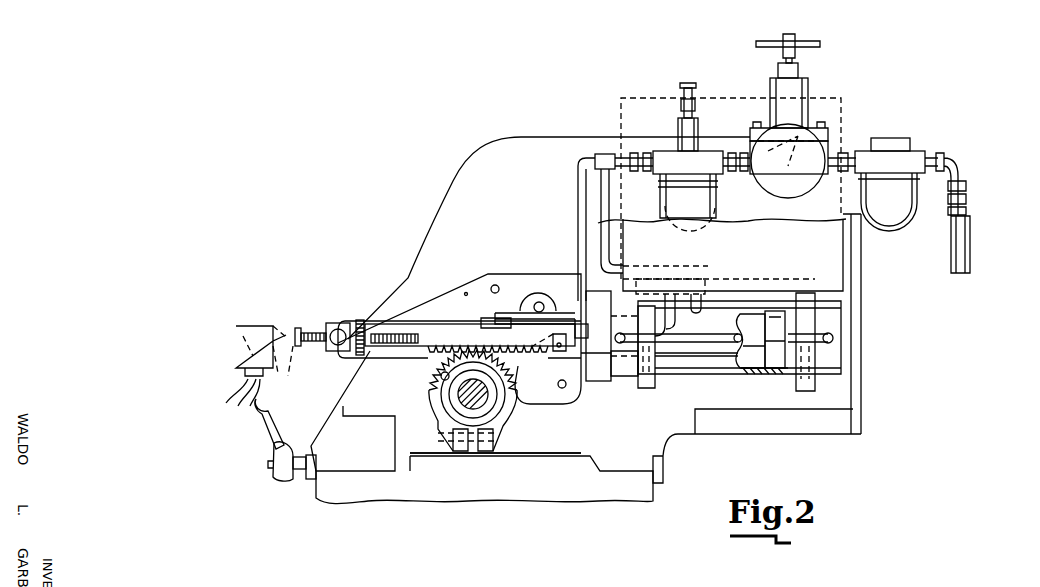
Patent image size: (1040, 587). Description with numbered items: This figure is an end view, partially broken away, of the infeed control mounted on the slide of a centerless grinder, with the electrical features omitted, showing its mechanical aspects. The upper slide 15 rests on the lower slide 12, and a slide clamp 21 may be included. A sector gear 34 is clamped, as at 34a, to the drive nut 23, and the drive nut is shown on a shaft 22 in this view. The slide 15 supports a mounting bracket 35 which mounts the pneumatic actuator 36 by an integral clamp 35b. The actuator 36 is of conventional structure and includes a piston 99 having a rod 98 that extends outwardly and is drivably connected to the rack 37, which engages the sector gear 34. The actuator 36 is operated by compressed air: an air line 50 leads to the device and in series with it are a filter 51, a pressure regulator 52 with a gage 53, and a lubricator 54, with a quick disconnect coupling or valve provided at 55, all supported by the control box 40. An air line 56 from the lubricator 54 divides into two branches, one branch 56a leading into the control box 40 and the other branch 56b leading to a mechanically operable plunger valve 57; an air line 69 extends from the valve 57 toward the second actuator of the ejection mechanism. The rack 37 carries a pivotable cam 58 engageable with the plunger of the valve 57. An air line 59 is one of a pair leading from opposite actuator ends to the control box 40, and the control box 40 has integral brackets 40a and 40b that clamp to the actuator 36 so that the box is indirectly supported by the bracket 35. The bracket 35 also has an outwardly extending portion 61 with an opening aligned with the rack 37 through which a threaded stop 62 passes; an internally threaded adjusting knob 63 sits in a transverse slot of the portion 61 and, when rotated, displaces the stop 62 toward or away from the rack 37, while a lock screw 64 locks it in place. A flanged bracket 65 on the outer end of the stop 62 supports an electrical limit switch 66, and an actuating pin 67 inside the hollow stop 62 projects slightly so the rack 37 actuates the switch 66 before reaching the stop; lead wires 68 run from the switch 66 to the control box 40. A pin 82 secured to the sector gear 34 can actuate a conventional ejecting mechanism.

The lower slide 12 is at (374, 492).
The upper slide 15 is at (470, 168).
The slide clamp 21 is at (284, 463).
The shaft 22 is at (490, 400).
The drive nut 23 is at (488, 413).
The sector gear 34 is at (440, 397).
The clamp 34a is at (460, 430).
The mounting bracket 35 is at (445, 300).
The integral clamp 35b is at (603, 367).
The pneumatic actuator 36 is at (712, 361).
The rack 37 is at (453, 332).
The control box 40 is at (832, 268).
The integral bracket 40a is at (655, 378).
The integral bracket 40b is at (818, 383).
The air line 50 is at (970, 236).
The filter 51 is at (905, 215).
The pressure regulator 52 is at (806, 85).
The gage 53 is at (800, 183).
The lubricator 54 is at (680, 160).
The quick disconnect coupling or valve 55 is at (968, 205).
The air line 56 is at (607, 153).
The branch 56a is at (612, 232).
The branch 56b is at (580, 228).
The plunger valve 57 is at (580, 300).
The pivotable cam 58 is at (563, 350).
The air line 59 is at (667, 341).
The outwardly extending portion 61 is at (335, 320).
The threaded stop 62 is at (317, 345).
The adjusting knob 63 is at (363, 320).
The lock screw 64 is at (343, 345).
The flanged bracket 65 is at (298, 328).
The electrical limit switch 66 is at (245, 324).
The actuating pin 67 is at (287, 373).
The lead wires 68 is at (236, 402).
The air line 69 is at (515, 302).
The pin 82 is at (443, 375).
The rod 98 is at (760, 332).
The piston 99 is at (776, 315).